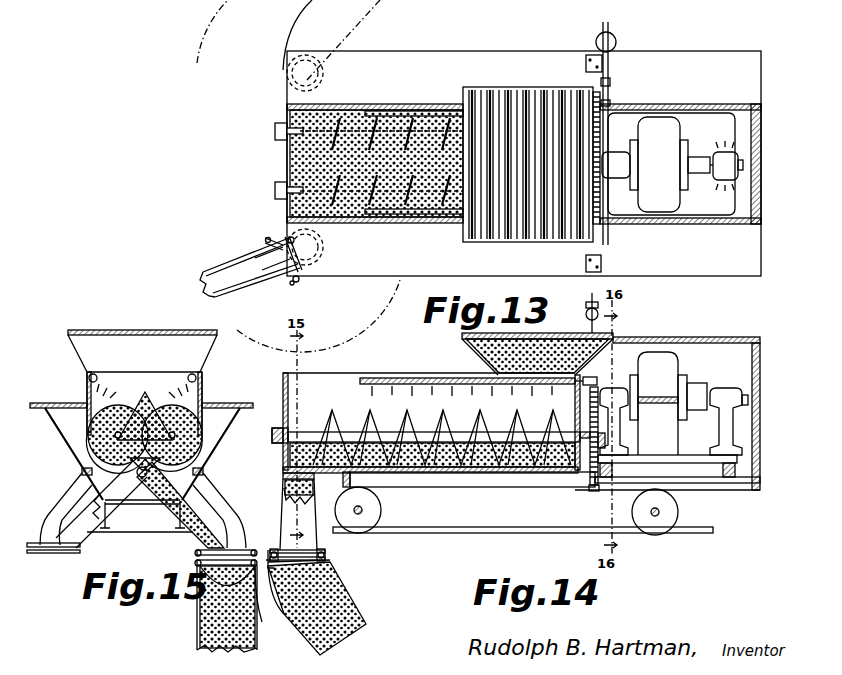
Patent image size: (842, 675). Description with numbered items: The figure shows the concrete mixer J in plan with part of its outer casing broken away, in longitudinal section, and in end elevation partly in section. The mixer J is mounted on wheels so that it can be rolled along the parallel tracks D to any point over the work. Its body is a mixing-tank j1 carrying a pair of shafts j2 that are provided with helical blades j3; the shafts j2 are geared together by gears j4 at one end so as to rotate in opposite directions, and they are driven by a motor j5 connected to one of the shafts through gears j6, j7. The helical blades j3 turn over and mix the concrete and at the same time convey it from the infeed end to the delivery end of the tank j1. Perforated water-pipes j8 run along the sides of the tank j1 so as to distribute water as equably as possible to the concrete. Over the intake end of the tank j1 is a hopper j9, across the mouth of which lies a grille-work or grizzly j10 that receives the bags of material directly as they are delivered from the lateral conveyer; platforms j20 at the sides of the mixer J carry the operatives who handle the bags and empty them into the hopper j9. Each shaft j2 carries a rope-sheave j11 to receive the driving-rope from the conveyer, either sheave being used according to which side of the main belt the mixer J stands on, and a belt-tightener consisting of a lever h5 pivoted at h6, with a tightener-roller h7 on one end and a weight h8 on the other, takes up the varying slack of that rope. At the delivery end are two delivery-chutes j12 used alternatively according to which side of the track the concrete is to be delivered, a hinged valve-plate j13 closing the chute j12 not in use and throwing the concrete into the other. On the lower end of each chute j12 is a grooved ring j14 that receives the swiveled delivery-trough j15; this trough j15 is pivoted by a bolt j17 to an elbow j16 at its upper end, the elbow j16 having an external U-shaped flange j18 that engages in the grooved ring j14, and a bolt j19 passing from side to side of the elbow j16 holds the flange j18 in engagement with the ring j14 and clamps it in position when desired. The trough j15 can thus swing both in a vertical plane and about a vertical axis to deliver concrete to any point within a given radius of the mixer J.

In FIG. 13, the mixing-tank j1 is at (292, 150).
In FIG. 14, the mixing-tank j1 is at (320, 386).
In FIG. 15, the mixing-tank j1 is at (201, 418).
In FIG. 13, the shafts j2 is at (275, 188).
In FIG. 14, the shafts j2 is at (279, 427).
In FIG. 15, the shafts j2 is at (169, 435).
In FIG. 13, the helical blades j3 is at (335, 195).
In FIG. 14, the helical blades j3 is at (332, 420).
In FIG. 15, the helical blades j3 is at (162, 410).
In FIG. 13, the gears j4 is at (593, 110).
In FIG. 14, the gears j4 is at (586, 436).
In FIG. 13, the motor j5 is at (670, 128).
In FIG. 14, the motor j5 is at (672, 380).
In FIG. 13, the gear j6 is at (612, 152).
In FIG. 14, the gear j6 is at (605, 390).
In FIG. 13, the gear j7 is at (608, 104).
In FIG. 14, the gear j7 is at (592, 486).
In FIG. 13, the water-pipes j8 is at (398, 114).
In FIG. 14, the water-pipes j8 is at (398, 379).
In FIG. 15, the water-pipes j8 is at (90, 377).
In FIG. 13, the hopper j9 is at (478, 90).
In FIG. 14, the hopper j9 is at (476, 346).
In FIG. 15, the hopper j9 is at (68, 338).
In FIG. 13, the grille-work or grizzly j10 is at (490, 225).
In FIG. 14, the grille-work or grizzly j10 is at (585, 335).
In FIG. 15, the grille-work or grizzly j10 is at (92, 330).
In FIG. 13, the rope-sheave j11 is at (609, 190).
In FIG. 14, the rope-sheave j11 is at (606, 444).
In FIG. 13, the delivery-chutes j12 is at (288, 76).
In FIG. 15, the delivery-chutes j12 is at (62, 500).
In FIG. 14, the hinged valve-plate j13 is at (283, 480).
In FIG. 15, the hinged valve-plate j13 is at (124, 478).
In FIG. 14, the grooved ring j14 is at (325, 561).
In FIG. 15, the grooved ring j14 is at (80, 552).
In FIG. 13, the swiveled delivery-trough or chute j15 is at (372, 22).
In FIG. 14, the swiveled delivery-trough or chute j15 is at (364, 616).
In FIG. 15, the swiveled delivery-trough or chute j15 is at (200, 645).
In FIG. 15, the elbow j16 is at (262, 592).
In FIG. 13, the bolt j17 is at (270, 262).
In FIG. 14, the bolt j17 is at (340, 565).
In FIG. 15, the bolt j17 is at (208, 585).
In FIG. 13, the U-shaped flange j18 is at (300, 279).
In FIG. 14, the U-shaped flange j18 is at (271, 550).
In FIG. 13, the bolt j19 is at (265, 241).
In FIG. 14, the bolt j19 is at (326, 554).
In FIG. 15, the bolt j19 is at (196, 557).
In FIG. 13, the platforms j20 is at (758, 86).
In FIG. 15, the platforms j20 is at (60, 403).
In FIG. 13, the lever h5 is at (612, 62).
In FIG. 13, the pivot h6 is at (586, 60).
In FIG. 13, the tightener-roller h7 is at (611, 82).
In FIG. 13, the weight h8 is at (617, 42).
In FIG. 13, the mixer J is at (772, 153).
In FIG. 14, the mixer J is at (772, 403).
In FIG. 15, the mixer J is at (139, 470).
In FIG. 14, the tracks D is at (462, 536).